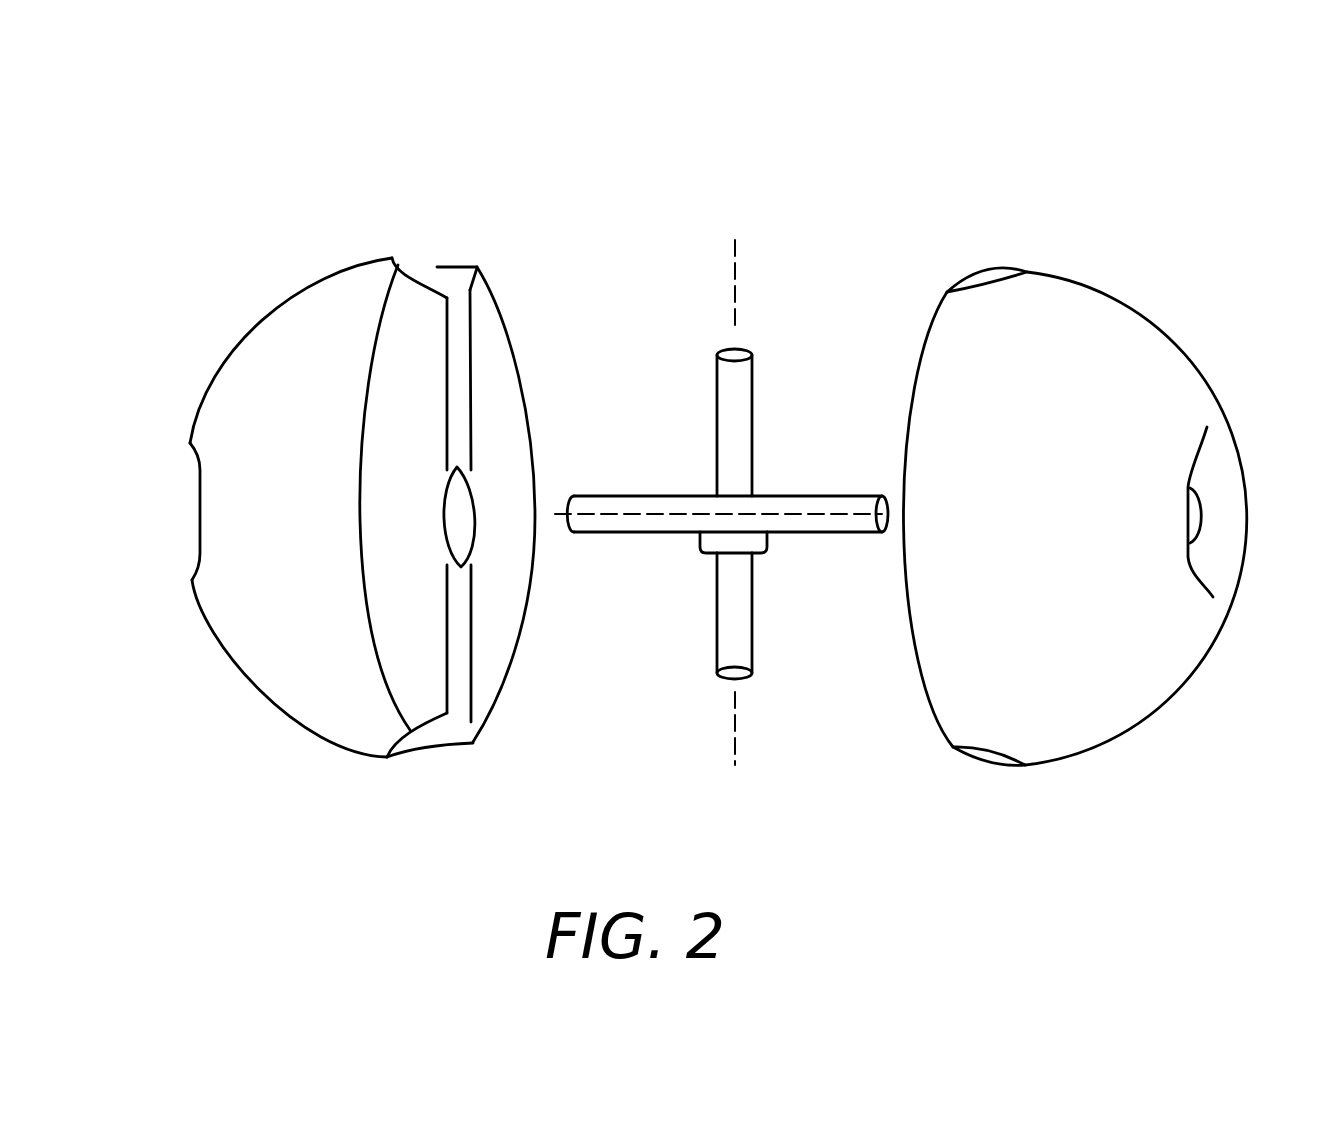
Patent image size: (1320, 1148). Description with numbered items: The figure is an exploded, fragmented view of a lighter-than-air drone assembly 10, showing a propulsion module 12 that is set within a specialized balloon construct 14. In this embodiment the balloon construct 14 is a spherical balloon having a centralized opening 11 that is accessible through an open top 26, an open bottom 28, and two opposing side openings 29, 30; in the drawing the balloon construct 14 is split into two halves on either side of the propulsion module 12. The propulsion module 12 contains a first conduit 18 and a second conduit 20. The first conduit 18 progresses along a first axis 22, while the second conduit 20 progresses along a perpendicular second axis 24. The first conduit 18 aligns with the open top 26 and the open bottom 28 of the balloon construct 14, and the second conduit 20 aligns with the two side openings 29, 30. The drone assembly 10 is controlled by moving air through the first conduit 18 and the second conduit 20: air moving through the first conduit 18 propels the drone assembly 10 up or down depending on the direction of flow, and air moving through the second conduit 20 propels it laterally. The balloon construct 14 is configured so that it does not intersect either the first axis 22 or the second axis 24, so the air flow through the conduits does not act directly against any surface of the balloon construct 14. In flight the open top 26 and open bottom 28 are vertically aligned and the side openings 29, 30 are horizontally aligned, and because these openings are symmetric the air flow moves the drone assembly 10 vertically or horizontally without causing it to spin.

The drone assembly 10 is at (852, 173).
The centralized opening 11 is at (463, 327).
The propulsion module 12 is at (401, 472).
The balloon construct 14 is at (1098, 473).
The first conduit 18 is at (733, 415).
The second conduit 20 is at (707, 510).
The first axis 22 is at (735, 732).
The second axis 24 is at (566, 512).
The open top 26 is at (437, 277).
The open bottom 28 is at (450, 730).
The side opening 29 is at (1193, 518).
The side opening 30 is at (192, 492).